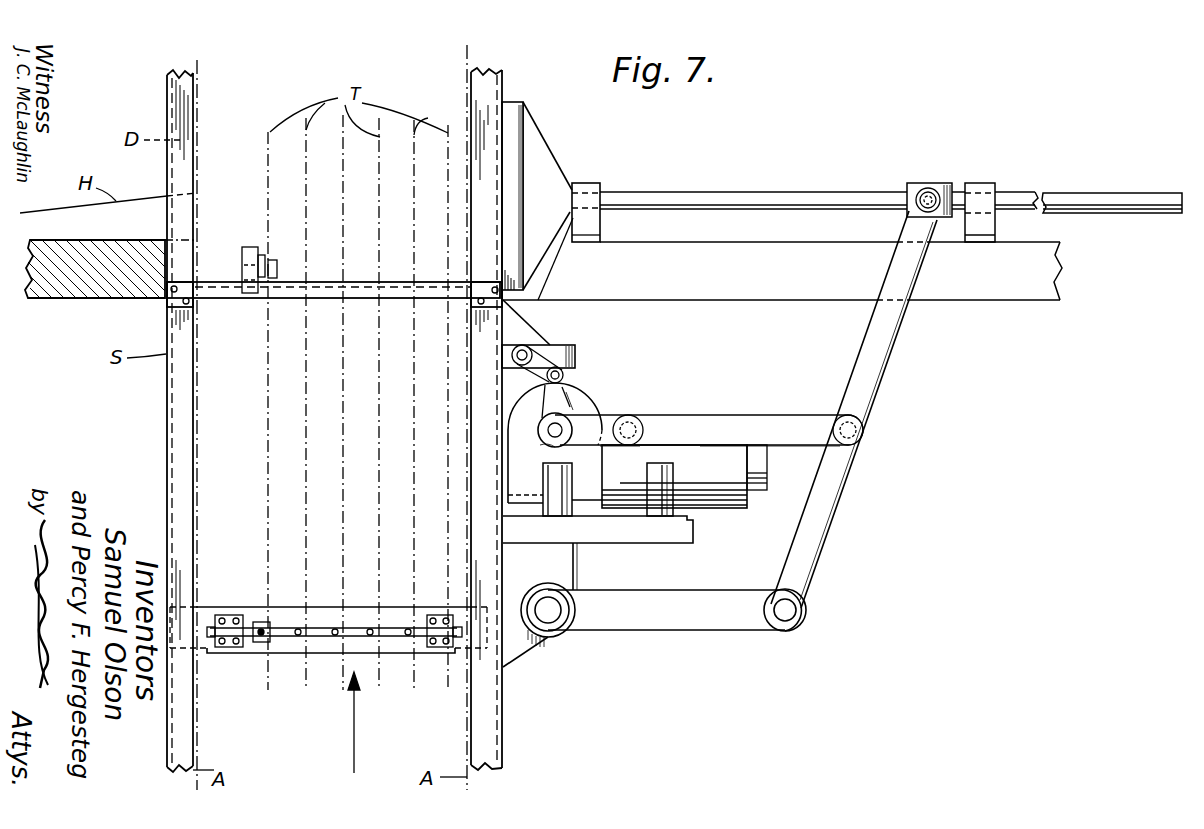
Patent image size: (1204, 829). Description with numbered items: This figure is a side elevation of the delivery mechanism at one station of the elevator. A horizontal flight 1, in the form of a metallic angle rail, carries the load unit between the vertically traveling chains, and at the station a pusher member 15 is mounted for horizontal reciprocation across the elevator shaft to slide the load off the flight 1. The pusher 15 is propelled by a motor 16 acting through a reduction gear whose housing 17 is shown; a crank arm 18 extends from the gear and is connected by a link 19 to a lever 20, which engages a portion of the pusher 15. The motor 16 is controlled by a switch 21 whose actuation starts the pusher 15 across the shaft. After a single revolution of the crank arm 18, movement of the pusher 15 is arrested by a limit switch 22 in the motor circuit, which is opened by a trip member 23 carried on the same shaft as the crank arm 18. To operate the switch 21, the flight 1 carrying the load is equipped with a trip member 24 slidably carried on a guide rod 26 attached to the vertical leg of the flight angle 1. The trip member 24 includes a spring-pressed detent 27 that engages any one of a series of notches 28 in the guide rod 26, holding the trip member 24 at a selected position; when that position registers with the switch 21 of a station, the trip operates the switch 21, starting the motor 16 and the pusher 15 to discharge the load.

The horizontal flights 1 is at (312, 613).
The pusher member 15 is at (528, 158).
The motor 16 is at (725, 500).
The reduction gear housing 17 is at (585, 490).
The crank arm 18 is at (612, 416).
The link 19 is at (720, 430).
The lever 20 is at (878, 390).
The switch 21 is at (252, 254).
The limit switch 22 is at (556, 356).
The trip member 23 is at (560, 400).
The trip member 24 is at (262, 643).
The guide rod 26 is at (325, 640).
The spring-pressed detent 27 is at (261, 621).
The notches 28 is at (370, 628).